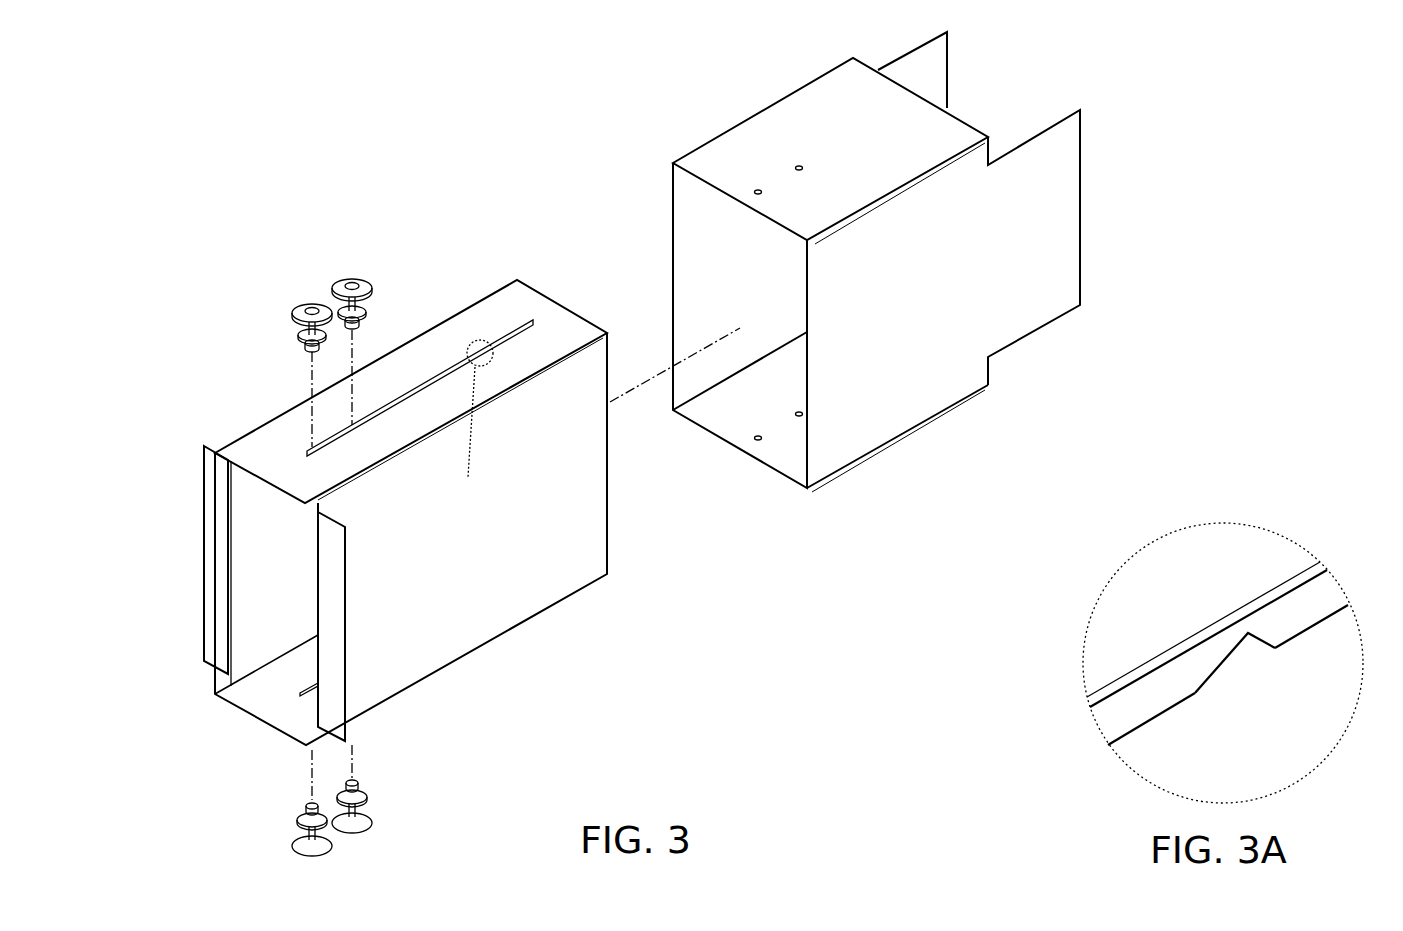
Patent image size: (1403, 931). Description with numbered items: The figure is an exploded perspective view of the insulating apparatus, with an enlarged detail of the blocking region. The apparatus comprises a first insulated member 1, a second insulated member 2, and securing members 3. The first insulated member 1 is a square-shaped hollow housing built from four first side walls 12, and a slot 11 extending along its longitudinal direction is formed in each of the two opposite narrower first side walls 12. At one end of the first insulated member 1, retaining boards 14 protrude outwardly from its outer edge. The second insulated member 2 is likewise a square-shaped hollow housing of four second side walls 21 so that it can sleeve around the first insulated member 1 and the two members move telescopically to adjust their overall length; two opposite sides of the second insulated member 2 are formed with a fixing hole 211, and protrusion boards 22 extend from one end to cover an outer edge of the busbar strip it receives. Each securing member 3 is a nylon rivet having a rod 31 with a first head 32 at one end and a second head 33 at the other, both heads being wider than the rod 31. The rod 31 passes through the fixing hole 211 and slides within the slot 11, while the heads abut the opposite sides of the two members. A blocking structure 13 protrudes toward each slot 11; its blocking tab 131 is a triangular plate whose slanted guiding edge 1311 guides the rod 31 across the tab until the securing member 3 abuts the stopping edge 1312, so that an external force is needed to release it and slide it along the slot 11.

In FIG. 3, the first insulated member 1 is at (433, 316).
In FIG. 3, the slot 11 is at (325, 440).
In FIG. 3A, the slot 11 is at (1135, 700).
In FIG. 3, the first side wall 12 is at (500, 305).
In FIG. 3, the blocking structure 13 is at (490, 360).
In FIG. 3A, the blocking structure 13 is at (1220, 657).
In FIG. 3A, the blocking tab 131 is at (1242, 655).
In FIG. 3A, the guiding edge 1311 is at (1213, 672).
In FIG. 3A, the stopping edge 1312 is at (1273, 630).
In FIG. 3, the retaining board 14 is at (215, 545).
In FIG. 3, the second insulated member 2 is at (673, 140).
In FIG. 3, the second side wall 21 is at (805, 100).
In FIG. 3, the fixing hole 211 is at (755, 188).
In FIG. 3, the protrusion board 22 is at (1035, 305).
In FIG. 3, the securing member 3 is at (292, 288).
In FIG. 3, the rod 31 is at (300, 335).
In FIG. 3, the first head 32 is at (298, 346).
In FIG. 3, the second head 33 is at (305, 312).